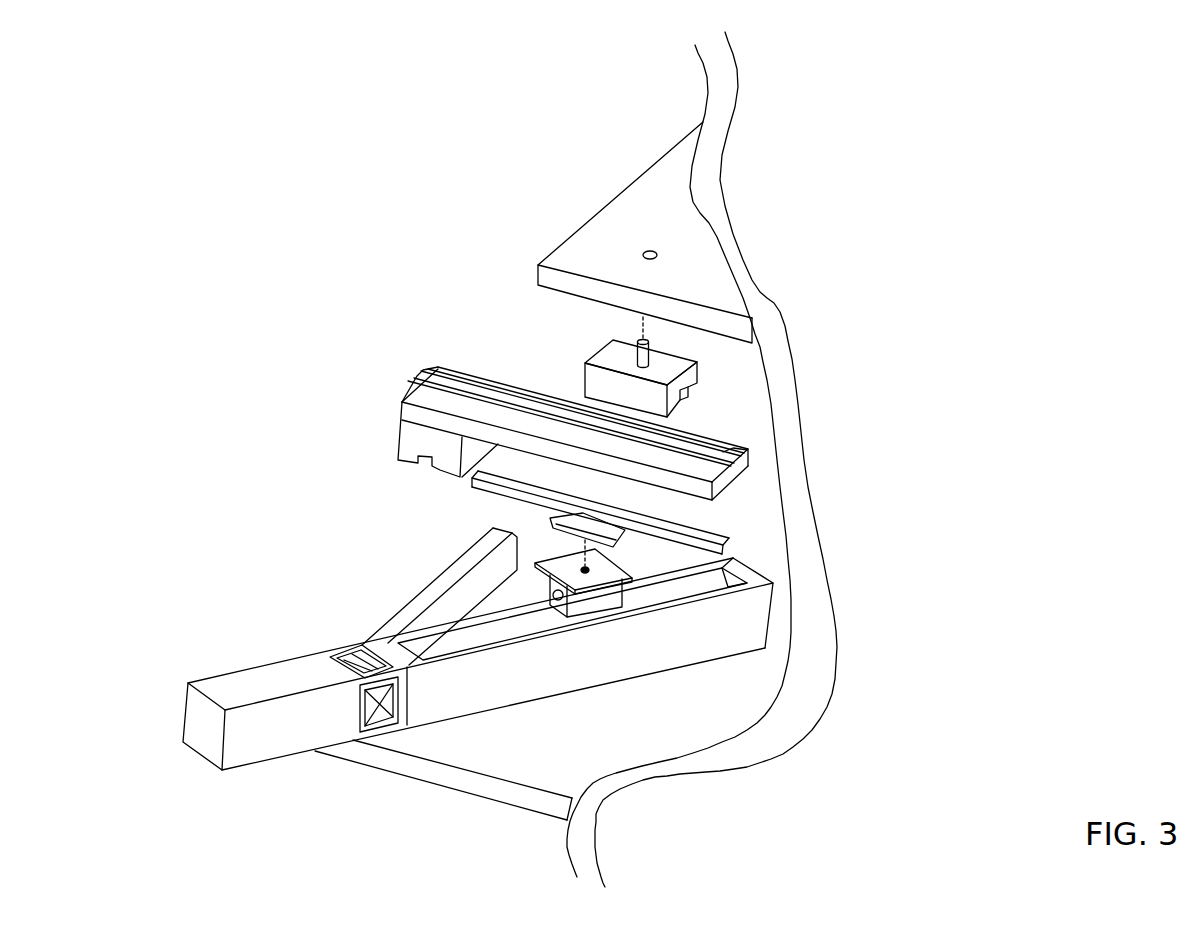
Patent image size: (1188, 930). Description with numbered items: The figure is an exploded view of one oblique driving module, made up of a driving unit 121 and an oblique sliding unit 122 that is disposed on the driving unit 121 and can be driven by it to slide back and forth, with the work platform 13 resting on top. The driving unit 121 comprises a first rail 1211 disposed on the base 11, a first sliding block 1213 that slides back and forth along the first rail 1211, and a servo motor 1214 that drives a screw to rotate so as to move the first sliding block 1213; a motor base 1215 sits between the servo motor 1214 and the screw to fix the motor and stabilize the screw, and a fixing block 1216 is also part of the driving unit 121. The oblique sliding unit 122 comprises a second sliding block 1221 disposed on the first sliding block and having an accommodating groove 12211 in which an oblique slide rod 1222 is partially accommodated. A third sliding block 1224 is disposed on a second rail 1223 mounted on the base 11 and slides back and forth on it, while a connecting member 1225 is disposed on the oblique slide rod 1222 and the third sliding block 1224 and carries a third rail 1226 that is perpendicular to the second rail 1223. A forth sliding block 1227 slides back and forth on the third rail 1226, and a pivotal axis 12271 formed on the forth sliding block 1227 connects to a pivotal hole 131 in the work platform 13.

The base 11 is at (560, 788).
The driving unit 121 is at (538, 698).
The first rail 1211 is at (528, 683).
The first sliding block 1213 is at (684, 697).
The accommodating groove 12211 is at (603, 559).
The servo motor 1214 is at (288, 687).
The motor base 1215 is at (358, 652).
The fixing block 1216 is at (753, 573).
The oblique sliding unit 122 is at (658, 411).
The second sliding block 1221 is at (550, 523).
The oblique slide rod 1222 is at (472, 485).
The second rail 1223 is at (438, 590).
The third sliding block 1224 is at (410, 443).
The connecting member 1225 is at (707, 490).
The third rail 1226 is at (747, 448).
The forth sliding block 1227 is at (693, 390).
The pivotal axis 12271 is at (630, 357).
The work platform 13 is at (658, 175).
The pivotal hole 131 is at (644, 253).